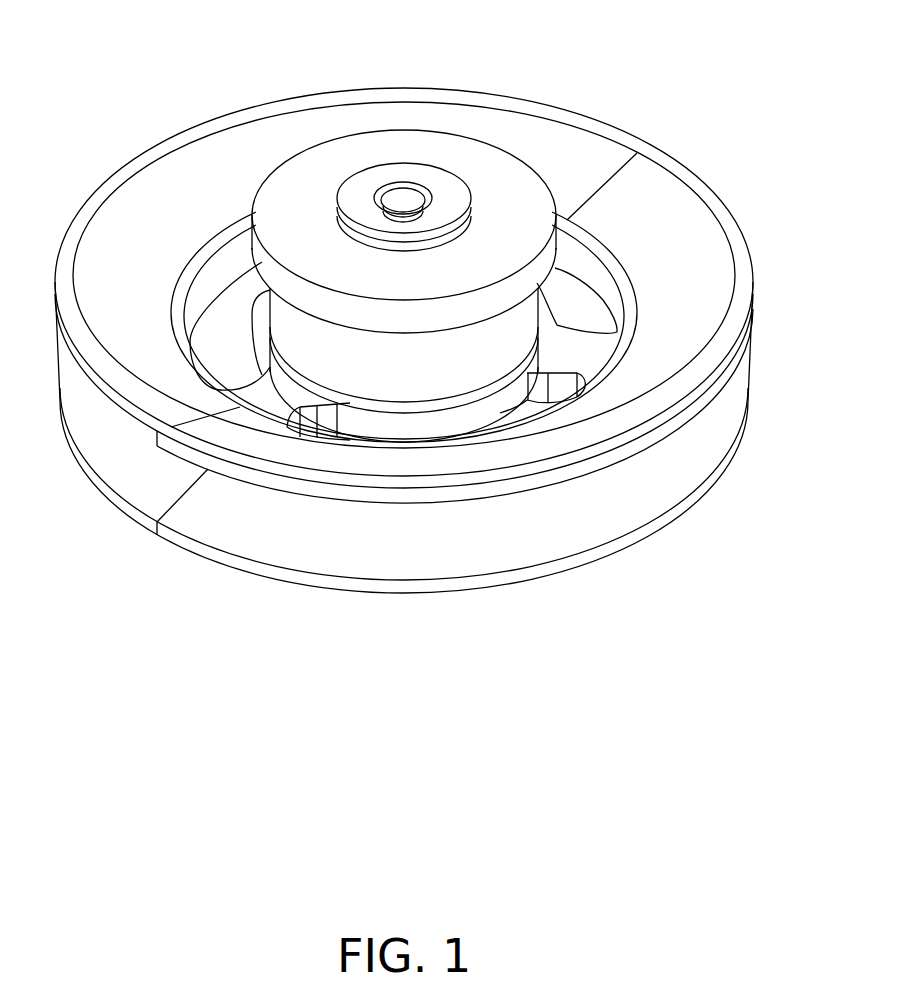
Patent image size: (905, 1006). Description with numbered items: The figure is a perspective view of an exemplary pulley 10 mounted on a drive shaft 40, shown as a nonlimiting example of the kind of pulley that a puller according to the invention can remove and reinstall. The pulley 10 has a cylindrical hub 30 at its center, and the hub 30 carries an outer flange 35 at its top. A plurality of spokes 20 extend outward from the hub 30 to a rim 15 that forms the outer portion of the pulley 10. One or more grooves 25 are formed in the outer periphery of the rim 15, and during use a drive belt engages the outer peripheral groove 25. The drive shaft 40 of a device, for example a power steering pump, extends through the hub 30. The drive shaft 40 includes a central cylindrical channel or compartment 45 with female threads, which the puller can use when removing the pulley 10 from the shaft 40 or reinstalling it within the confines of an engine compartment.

The pulley 10 is at (394, 612).
The rim 15 is at (673, 234).
The spokes 20 is at (266, 404).
The grooves 25 is at (653, 470).
The cylindrical hub 30 is at (419, 373).
The outer flange 35 is at (291, 195).
The drive shaft 40 is at (447, 188).
The central cylindrical channel 45 is at (393, 193).